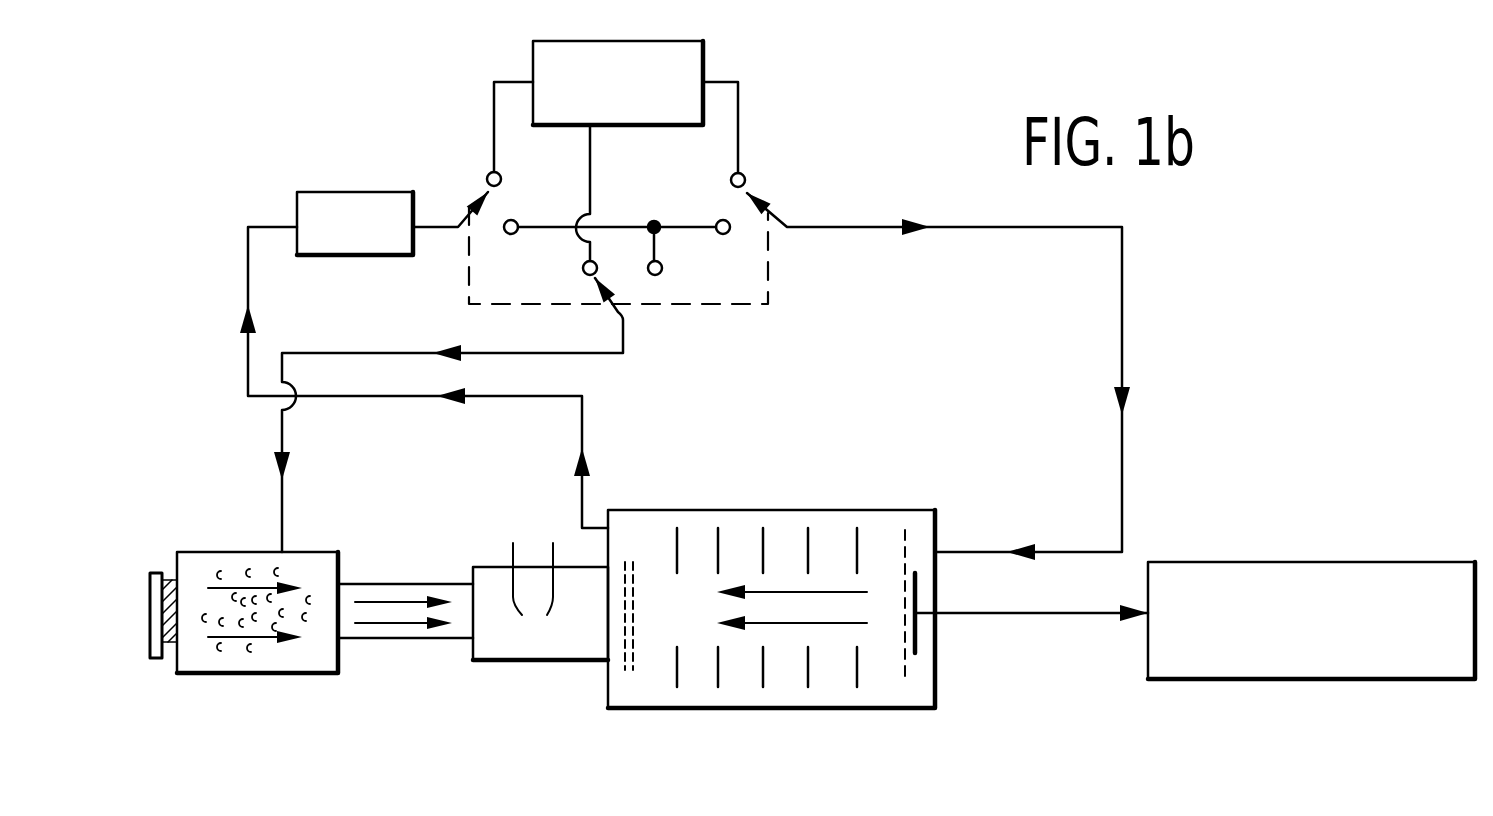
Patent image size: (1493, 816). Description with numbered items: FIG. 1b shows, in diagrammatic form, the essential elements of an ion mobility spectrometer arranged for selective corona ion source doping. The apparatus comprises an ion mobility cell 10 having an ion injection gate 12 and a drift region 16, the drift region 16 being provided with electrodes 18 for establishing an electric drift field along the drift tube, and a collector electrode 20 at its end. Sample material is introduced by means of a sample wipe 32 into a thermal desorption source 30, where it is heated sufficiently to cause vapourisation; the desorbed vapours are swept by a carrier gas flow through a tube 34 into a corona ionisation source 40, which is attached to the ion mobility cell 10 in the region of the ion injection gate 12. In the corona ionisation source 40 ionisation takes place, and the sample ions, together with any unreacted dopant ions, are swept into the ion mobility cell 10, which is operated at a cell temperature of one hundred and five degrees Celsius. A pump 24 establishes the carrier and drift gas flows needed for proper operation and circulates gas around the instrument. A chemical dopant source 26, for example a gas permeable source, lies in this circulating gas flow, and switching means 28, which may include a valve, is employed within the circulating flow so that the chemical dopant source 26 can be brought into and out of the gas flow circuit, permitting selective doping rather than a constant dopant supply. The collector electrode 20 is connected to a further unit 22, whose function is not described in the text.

The ion mobility cell 10 is at (720, 710).
The ion injection gate 12 is at (633, 667).
The drift region 16 is at (825, 683).
The electrodes 18 is at (862, 537).
The collector electrode 20 is at (920, 572).
The signal amplifier/processor 22 is at (1247, 667).
The pump 24 is at (335, 192).
The chemical dopant source 26 is at (543, 62).
The switching means 28 is at (663, 205).
The thermal desorption source 30 is at (237, 582).
The sample wipe 32 is at (150, 660).
The tube 34 is at (393, 640).
The corona ionisation source 40 is at (500, 660).